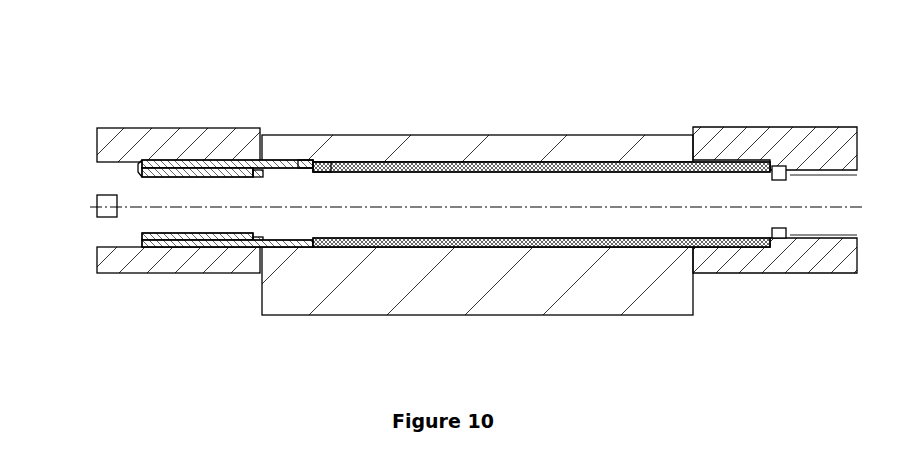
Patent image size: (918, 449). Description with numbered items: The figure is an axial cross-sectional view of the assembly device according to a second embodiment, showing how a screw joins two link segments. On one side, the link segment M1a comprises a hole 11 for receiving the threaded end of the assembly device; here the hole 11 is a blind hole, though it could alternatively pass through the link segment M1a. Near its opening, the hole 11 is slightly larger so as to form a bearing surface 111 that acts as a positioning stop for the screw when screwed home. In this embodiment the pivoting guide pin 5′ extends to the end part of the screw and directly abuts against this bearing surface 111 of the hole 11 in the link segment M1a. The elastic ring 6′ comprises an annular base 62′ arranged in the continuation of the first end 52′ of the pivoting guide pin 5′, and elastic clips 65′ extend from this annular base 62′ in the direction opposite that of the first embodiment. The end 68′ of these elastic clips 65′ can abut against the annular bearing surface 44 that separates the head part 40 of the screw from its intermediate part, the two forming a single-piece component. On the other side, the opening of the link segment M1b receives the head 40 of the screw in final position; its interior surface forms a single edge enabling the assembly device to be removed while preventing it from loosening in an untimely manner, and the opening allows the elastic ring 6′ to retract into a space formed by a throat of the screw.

The head part 40 is at (115, 188).
The annular bearing surface 44 is at (142, 172).
The end of elastic clips 68′ is at (151, 160).
The elastic ring 6′ is at (223, 165).
The annular base 62′ is at (303, 163).
The first end of pivoting guide pin 52′ is at (314, 168).
The pivoting guide pin 5′ is at (508, 163).
The bearing surface 111 is at (772, 168).
The link segment M1a is at (793, 145).
The link segment M1b is at (115, 258).
The elastic clips 65′ is at (202, 243).
The hole 11 is at (820, 238).